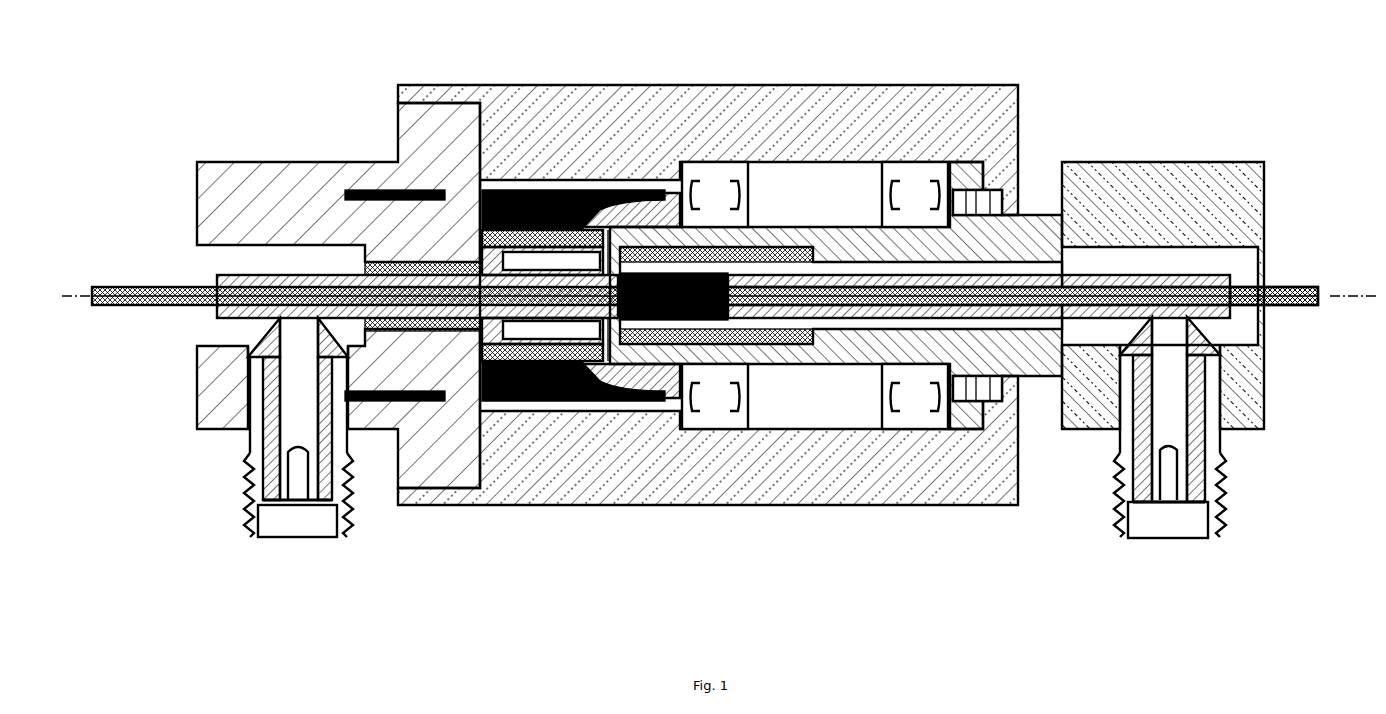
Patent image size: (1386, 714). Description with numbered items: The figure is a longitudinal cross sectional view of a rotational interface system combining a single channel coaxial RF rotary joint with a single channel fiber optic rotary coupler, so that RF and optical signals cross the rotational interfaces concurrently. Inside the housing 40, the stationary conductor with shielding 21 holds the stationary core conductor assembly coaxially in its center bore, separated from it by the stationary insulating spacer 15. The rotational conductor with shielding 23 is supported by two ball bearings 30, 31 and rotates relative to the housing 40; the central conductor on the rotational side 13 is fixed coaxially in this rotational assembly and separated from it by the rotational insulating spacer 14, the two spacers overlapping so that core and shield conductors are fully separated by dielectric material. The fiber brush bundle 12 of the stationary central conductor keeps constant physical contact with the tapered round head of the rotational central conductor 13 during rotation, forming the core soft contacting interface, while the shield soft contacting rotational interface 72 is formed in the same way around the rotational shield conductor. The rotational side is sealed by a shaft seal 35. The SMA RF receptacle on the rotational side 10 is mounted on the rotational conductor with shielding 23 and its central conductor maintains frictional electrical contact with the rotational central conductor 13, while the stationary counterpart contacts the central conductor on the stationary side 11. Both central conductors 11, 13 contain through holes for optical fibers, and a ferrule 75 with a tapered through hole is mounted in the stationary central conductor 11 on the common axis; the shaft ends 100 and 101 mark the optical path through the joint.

The SMA RF receptacle on the rotational side 10 is at (1128, 538).
The central conductor on the stationary side 11 is at (530, 393).
The fiber brush bundle, stationary central conductor 12 is at (683, 324).
The central conductor on the rotational side 13 is at (1095, 308).
The rotational insulating spacer 14 is at (795, 345).
The stationary insulating spacer 15 is at (483, 333).
The stationary conductor with shielding 21 is at (222, 198).
The rotational conductor with shielding 23 is at (1243, 418).
The bearing 30 is at (886, 176).
The bearing 31 is at (708, 186).
The seal 35 is at (980, 200).
The housing 40 is at (510, 85).
The fiber brush bundle shielding for soft contacting rotational interface 72 is at (600, 385).
The ferrule 75 is at (575, 352).
The shaft inlet end 100 is at (123, 281).
The shaft outlet end 101 is at (1305, 281).